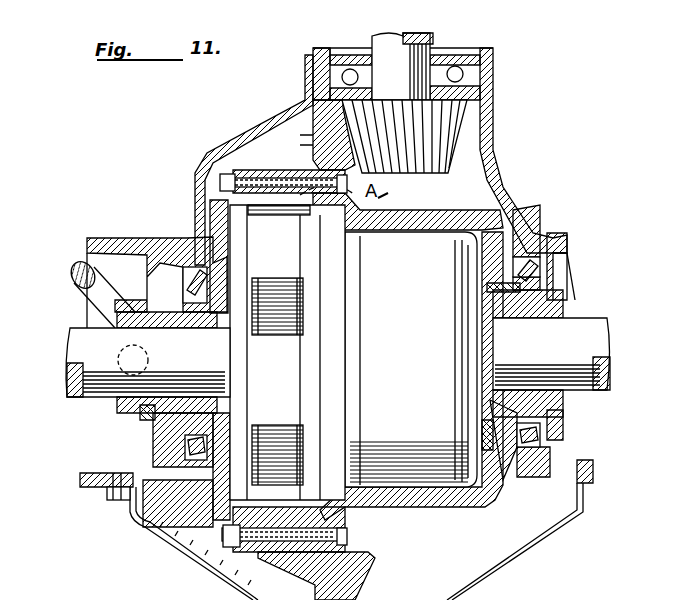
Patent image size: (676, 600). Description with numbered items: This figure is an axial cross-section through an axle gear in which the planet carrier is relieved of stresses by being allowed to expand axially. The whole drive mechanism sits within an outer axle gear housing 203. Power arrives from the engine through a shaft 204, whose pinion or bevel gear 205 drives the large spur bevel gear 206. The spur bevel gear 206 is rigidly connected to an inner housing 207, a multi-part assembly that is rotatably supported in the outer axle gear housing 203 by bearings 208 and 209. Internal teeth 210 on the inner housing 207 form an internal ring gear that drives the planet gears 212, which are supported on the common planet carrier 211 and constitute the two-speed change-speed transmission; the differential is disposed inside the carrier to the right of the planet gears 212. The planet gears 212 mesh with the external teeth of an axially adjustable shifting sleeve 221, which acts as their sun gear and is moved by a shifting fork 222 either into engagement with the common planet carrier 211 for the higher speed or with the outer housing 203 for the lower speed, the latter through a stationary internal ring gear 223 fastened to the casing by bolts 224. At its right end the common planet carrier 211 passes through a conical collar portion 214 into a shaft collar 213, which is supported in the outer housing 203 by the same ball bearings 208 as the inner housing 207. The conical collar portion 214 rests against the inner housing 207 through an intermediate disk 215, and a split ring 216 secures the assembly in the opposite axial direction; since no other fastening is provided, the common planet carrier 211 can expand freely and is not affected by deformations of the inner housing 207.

The outer axle gear housing 203 is at (497, 100).
The shaft 204 is at (430, 43).
The pinion or bevel gear 205 is at (447, 175).
The spur bevel gear 206 is at (305, 103).
The inner housing 207 is at (513, 233).
The bearings 208 is at (540, 257).
The bearings 209 is at (190, 232).
The internal teeth 210 is at (277, 510).
The common planet carrier 211 is at (432, 480).
The planet gears 212 is at (275, 215).
The shaft collar 213 is at (563, 407).
The conical collar portion 214 is at (487, 437).
The intermediate disk 215 is at (497, 287).
The split ring 216 is at (563, 290).
The shifting sleeve 221 is at (153, 407).
The shifting fork 222 is at (85, 290).
The stationary internal ring gear 223 is at (160, 450).
The bolts 224 is at (147, 518).